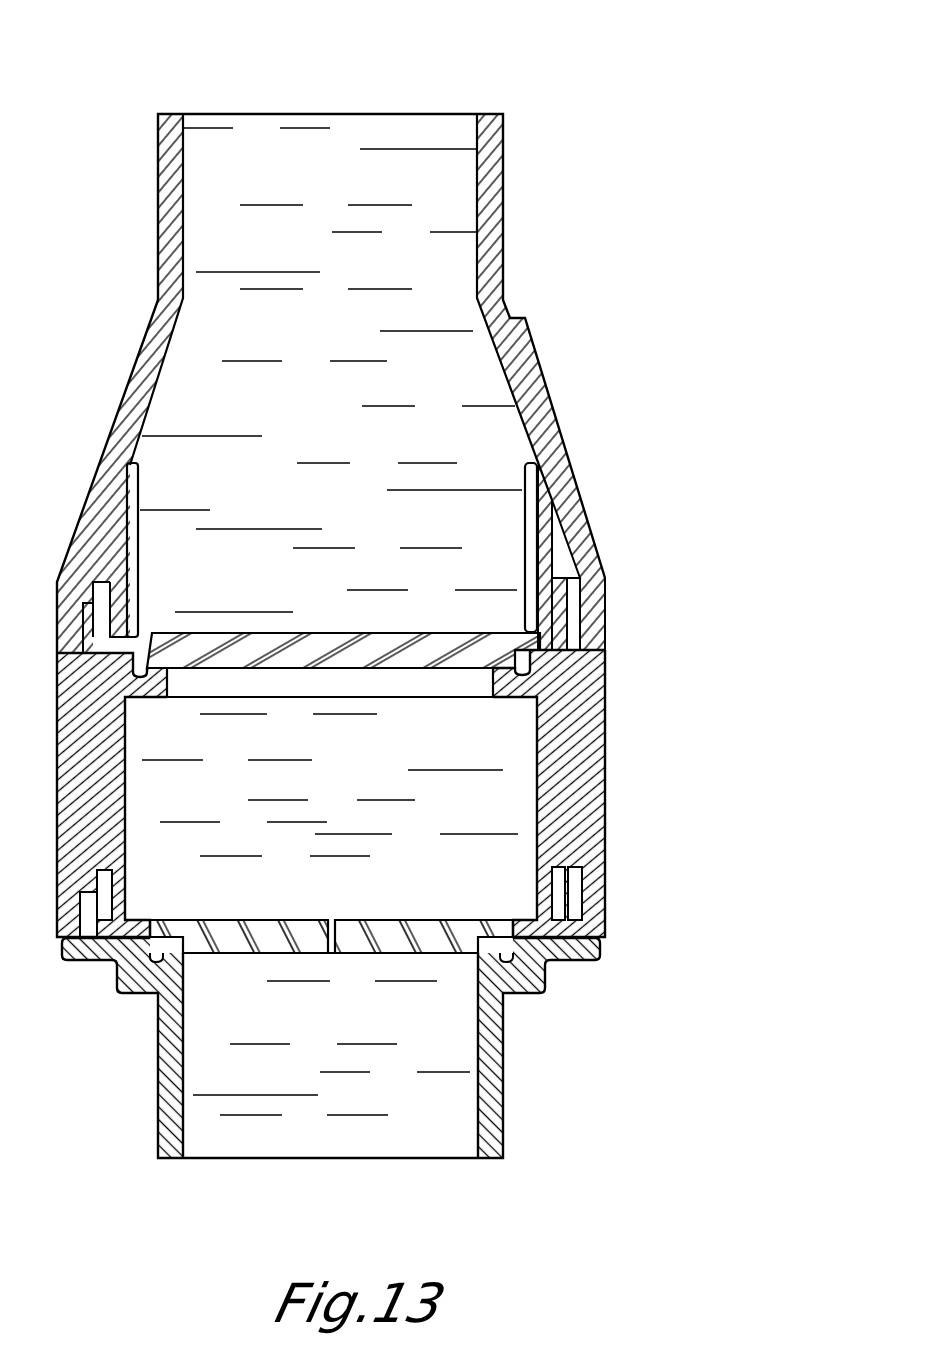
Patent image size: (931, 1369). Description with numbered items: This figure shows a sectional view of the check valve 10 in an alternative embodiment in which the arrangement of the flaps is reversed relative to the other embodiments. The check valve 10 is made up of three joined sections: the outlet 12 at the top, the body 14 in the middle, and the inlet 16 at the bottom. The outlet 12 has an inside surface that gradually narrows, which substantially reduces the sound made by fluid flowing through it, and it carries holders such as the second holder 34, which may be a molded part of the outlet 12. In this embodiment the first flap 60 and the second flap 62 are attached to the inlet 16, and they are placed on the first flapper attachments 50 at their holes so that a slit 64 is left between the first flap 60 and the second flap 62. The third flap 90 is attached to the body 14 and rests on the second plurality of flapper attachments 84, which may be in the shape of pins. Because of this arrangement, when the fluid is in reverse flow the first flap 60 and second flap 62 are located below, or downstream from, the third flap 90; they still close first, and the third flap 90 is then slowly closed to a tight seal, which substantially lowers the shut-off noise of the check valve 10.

The check valve 10 is at (676, 52).
The outlet 12 is at (569, 466).
The body 14 is at (596, 727).
The inlet 16 is at (505, 1053).
The second holder 34 is at (541, 625).
The first flapper attachments 50 is at (530, 630).
The first flap 60 is at (269, 950).
The second flap 62 is at (383, 950).
The slit 64 is at (331, 920).
The second plurality of flapper attachments 84 is at (138, 922).
The third flap 90 is at (358, 660).